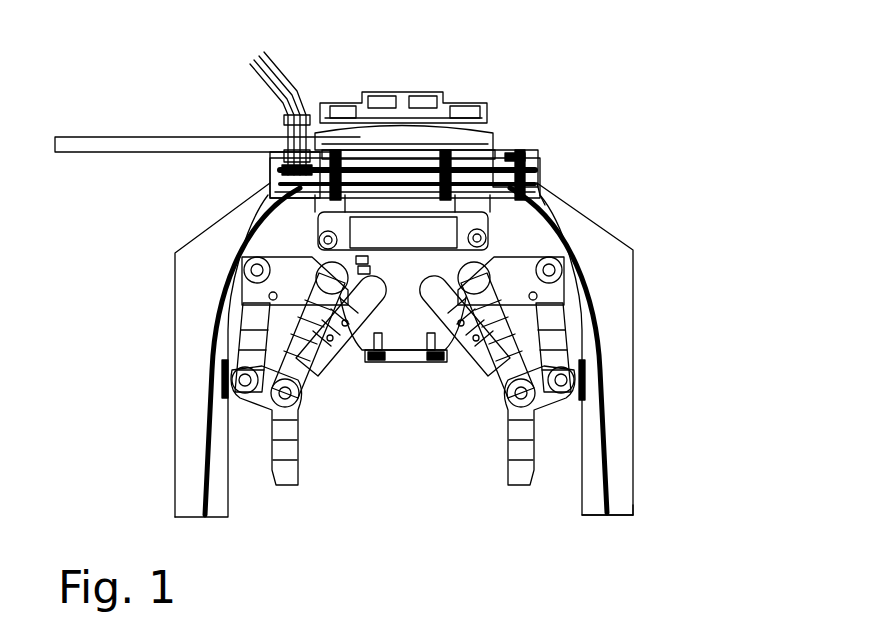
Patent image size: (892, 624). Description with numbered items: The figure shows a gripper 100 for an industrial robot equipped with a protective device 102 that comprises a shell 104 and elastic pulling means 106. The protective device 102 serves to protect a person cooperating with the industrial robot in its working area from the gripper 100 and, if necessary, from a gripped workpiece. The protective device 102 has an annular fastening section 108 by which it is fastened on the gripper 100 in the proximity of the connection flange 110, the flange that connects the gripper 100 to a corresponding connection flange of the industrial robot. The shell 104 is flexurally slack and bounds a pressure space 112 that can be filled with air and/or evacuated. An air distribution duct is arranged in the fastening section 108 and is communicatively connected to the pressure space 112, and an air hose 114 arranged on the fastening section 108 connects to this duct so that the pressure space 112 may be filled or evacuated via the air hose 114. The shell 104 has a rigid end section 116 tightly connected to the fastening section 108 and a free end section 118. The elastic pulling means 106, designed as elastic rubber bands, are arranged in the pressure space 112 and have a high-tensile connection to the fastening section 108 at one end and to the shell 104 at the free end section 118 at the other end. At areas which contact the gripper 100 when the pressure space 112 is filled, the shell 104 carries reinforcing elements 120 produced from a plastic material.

The gripper 100 is at (340, 387).
The protective device 102 is at (436, 358).
The shell 104 is at (175, 350).
The elastic pulling means 106 is at (203, 447).
The fastening section 108 is at (530, 160).
The connection flange 110 is at (463, 100).
The pressure space 112 is at (625, 308).
The air hose 114 is at (257, 66).
The rigid end section 116 is at (568, 172).
The free end section 118 is at (622, 528).
The reinforcing elements 120 is at (584, 390).